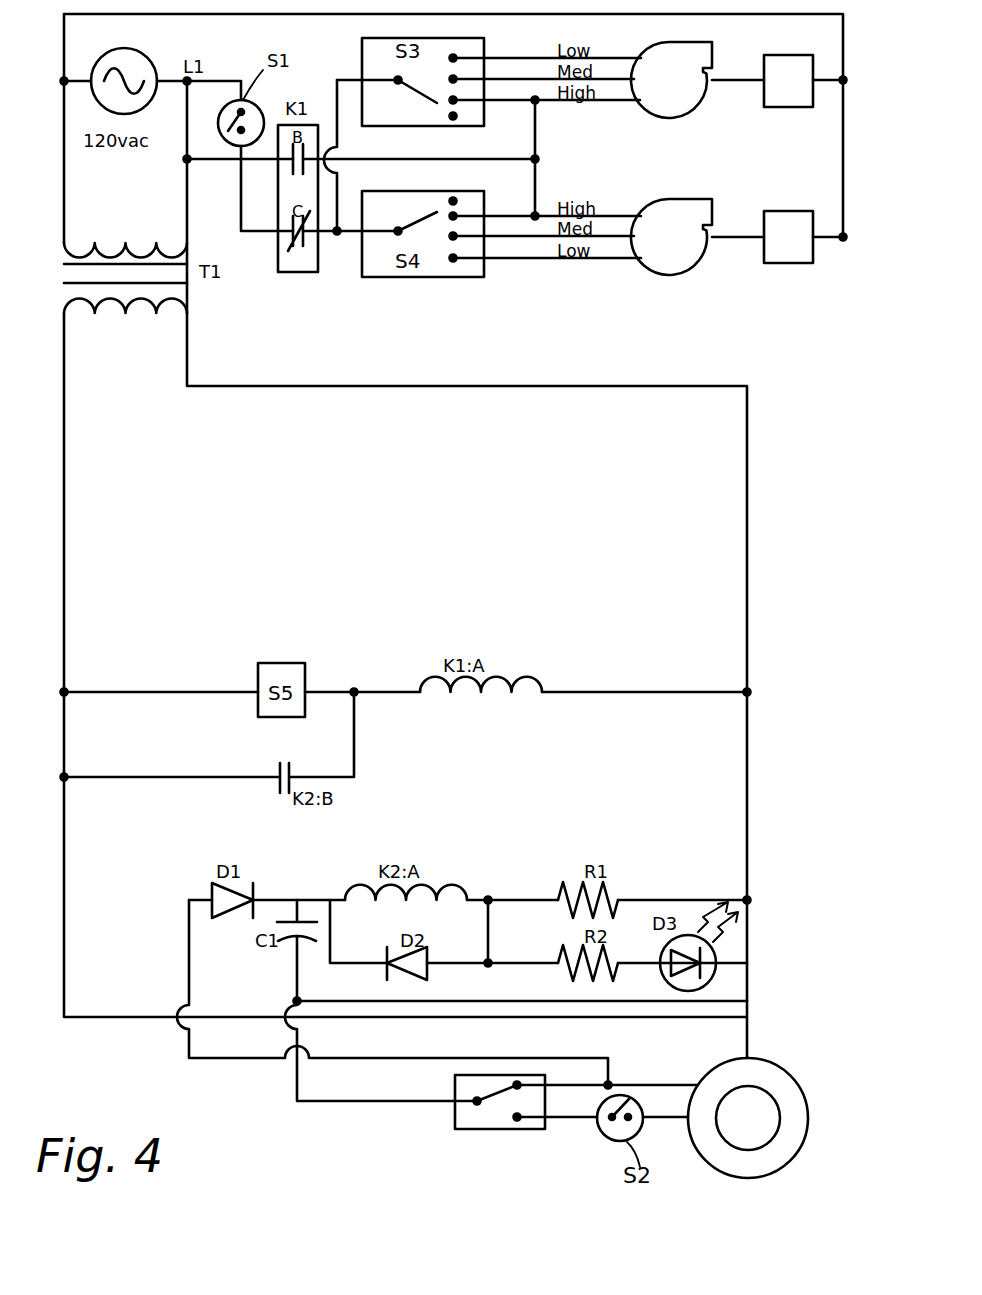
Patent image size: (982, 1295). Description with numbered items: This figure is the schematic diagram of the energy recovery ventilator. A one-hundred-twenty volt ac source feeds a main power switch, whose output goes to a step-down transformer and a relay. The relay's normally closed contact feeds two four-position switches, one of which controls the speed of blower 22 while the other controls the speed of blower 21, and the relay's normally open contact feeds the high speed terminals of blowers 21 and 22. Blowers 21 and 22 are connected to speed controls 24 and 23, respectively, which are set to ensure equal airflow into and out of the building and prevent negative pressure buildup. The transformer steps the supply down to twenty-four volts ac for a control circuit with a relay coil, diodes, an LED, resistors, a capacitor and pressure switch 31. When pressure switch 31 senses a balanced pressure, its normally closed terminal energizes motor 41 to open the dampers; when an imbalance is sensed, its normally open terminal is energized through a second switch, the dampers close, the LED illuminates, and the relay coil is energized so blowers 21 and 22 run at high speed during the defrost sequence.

The blower 21 is at (672, 207).
The blower 22 is at (675, 50).
The speed control 23 is at (788, 81).
The speed control 24 is at (788, 237).
The pressure switch 31 is at (490, 1129).
The motor 41 is at (765, 1105).